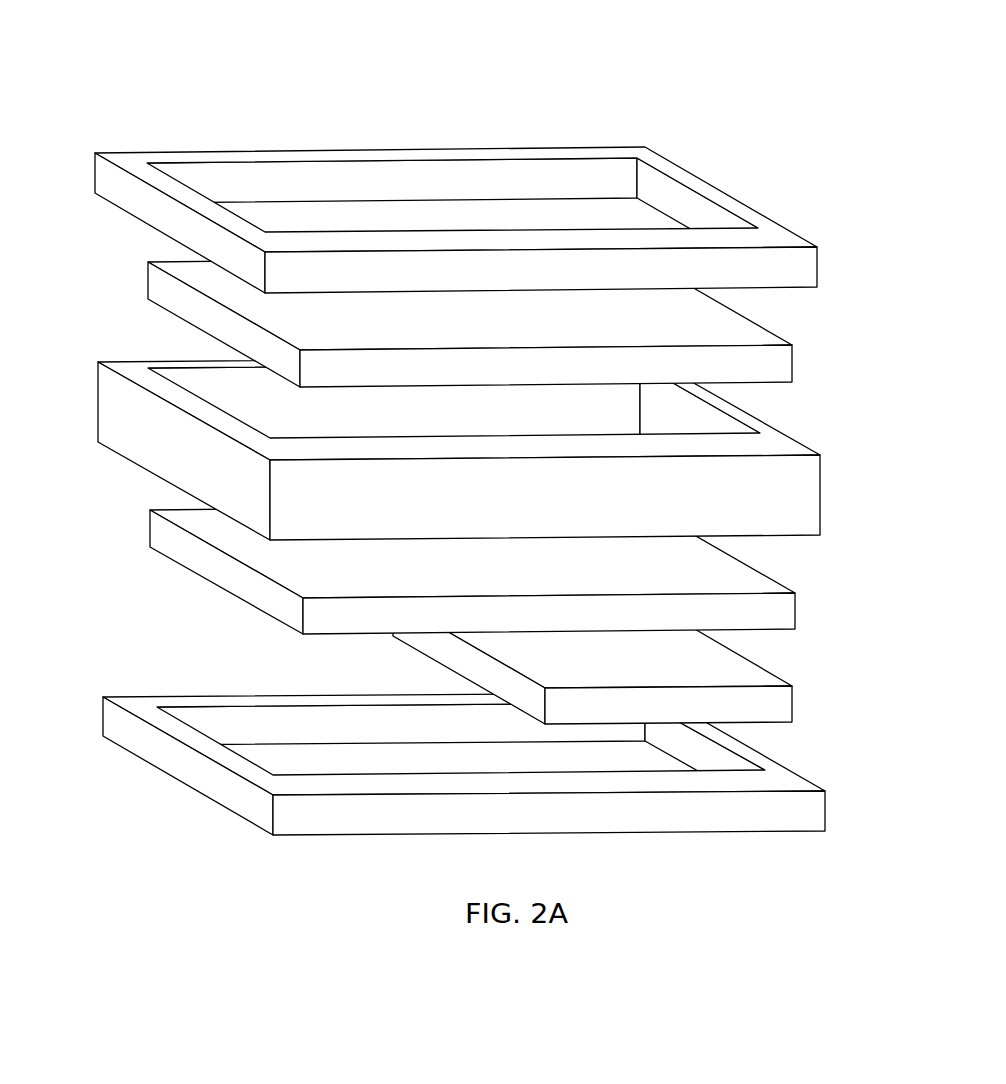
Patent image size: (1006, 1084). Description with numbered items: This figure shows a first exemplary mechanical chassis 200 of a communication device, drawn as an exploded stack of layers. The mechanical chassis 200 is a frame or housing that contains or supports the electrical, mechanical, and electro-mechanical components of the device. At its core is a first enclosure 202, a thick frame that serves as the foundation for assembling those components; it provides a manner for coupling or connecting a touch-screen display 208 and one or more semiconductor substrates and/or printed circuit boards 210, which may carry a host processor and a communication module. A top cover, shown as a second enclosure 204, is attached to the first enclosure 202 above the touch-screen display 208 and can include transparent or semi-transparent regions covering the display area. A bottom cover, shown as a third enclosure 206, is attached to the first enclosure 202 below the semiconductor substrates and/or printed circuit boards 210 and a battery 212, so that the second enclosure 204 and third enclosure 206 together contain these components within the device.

The mechanical chassis 200 is at (946, 151).
The first enclosure 202 is at (821, 500).
The second enclosure 204 is at (818, 266).
The third enclosure 206 is at (826, 812).
The touch-screen display 208 is at (793, 362).
The semiconductor substrates and/or printed circuit boards 210 is at (796, 614).
The battery 212 is at (793, 702).